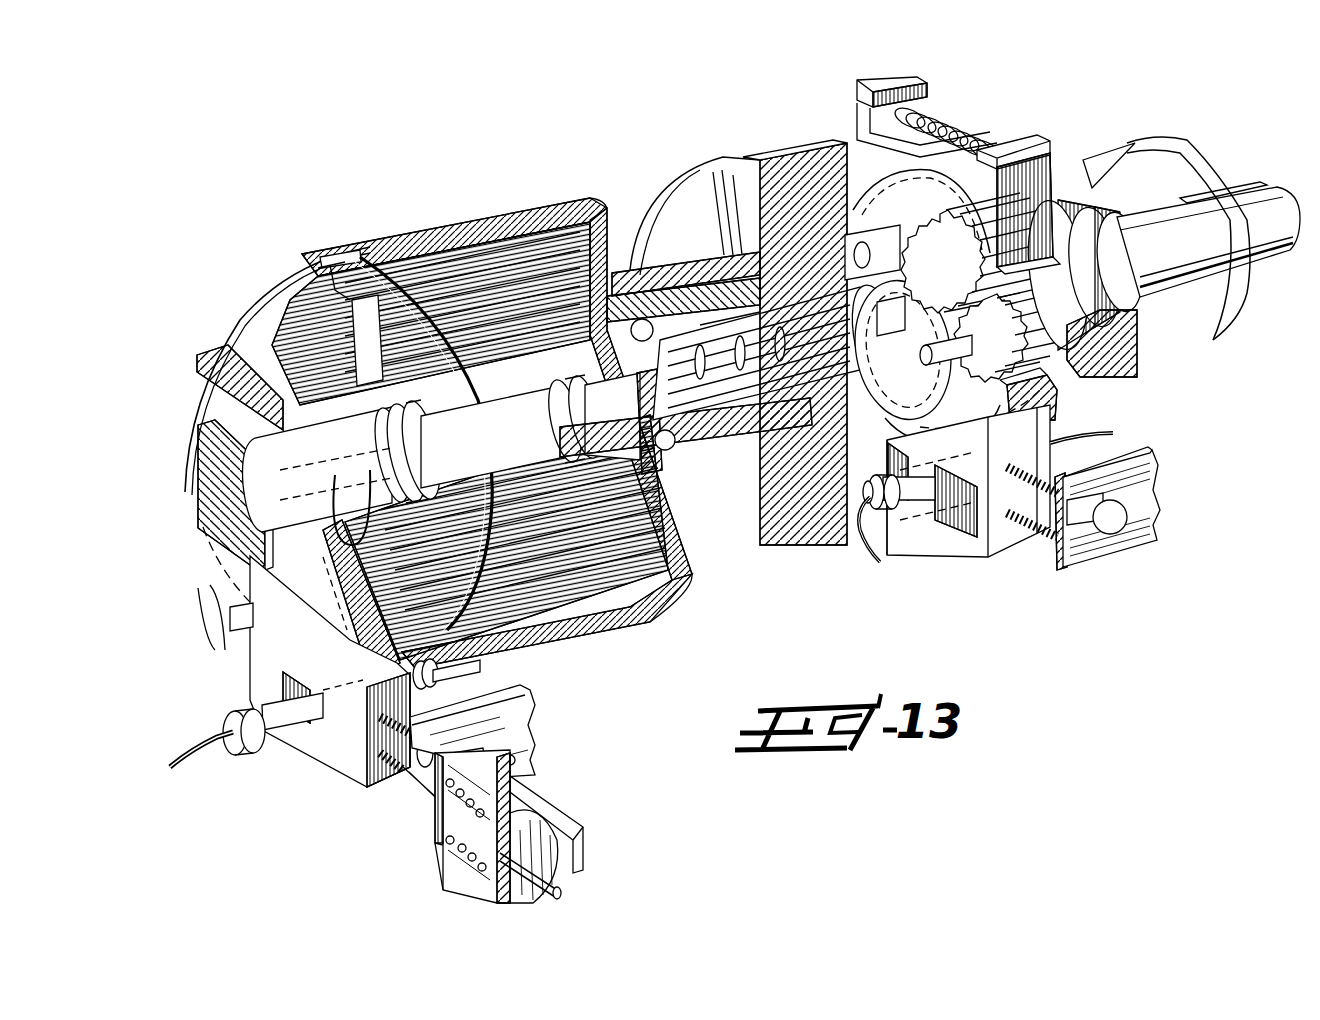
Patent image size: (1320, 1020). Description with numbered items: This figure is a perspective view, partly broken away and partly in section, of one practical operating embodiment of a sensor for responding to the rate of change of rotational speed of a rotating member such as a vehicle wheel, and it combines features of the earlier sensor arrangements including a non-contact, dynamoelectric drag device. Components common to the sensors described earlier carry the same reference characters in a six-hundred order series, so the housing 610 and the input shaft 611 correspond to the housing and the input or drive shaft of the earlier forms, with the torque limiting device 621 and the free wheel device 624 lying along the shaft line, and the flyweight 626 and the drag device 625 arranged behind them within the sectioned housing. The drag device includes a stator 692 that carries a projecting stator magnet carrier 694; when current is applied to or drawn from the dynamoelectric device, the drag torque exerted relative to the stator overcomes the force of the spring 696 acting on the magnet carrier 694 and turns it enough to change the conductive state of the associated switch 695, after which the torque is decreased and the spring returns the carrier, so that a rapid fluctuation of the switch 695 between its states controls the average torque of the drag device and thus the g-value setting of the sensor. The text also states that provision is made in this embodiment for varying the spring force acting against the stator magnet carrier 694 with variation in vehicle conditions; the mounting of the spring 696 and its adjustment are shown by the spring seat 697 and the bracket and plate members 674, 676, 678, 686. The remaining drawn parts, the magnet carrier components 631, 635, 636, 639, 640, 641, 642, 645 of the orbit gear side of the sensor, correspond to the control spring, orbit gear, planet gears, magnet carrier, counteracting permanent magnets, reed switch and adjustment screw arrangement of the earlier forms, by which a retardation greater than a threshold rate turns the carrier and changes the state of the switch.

The housing end block 610 is at (780, 150).
The output shaft 611 is at (1160, 230).
The clamp and spring assembly 621 is at (1057, 186).
The bearing 624 is at (643, 228).
The housing end plate 625 is at (631, 267).
The motor housing 626 is at (510, 207).
The clamp plate 631 is at (1037, 557).
The bearing support 635 is at (1067, 377).
The bearing retainer 636 is at (1100, 320).
The mounting bracket 639 is at (1000, 543).
The cable 640 is at (867, 478).
The insulating plate 641 is at (963, 520).
The bolt 642 is at (923, 500).
The clamp block 645 is at (1113, 527).
The mounting rail 674 is at (560, 867).
The bracket plate 676 is at (513, 790).
The bar 678 is at (523, 823).
The rivets 686 is at (447, 847).
The strap 692 is at (330, 267).
The stator magnet carrier 694 is at (345, 318).
The lead cable 695 is at (263, 747).
The terminal plate 696 is at (383, 783).
The bolt 697 is at (427, 807).